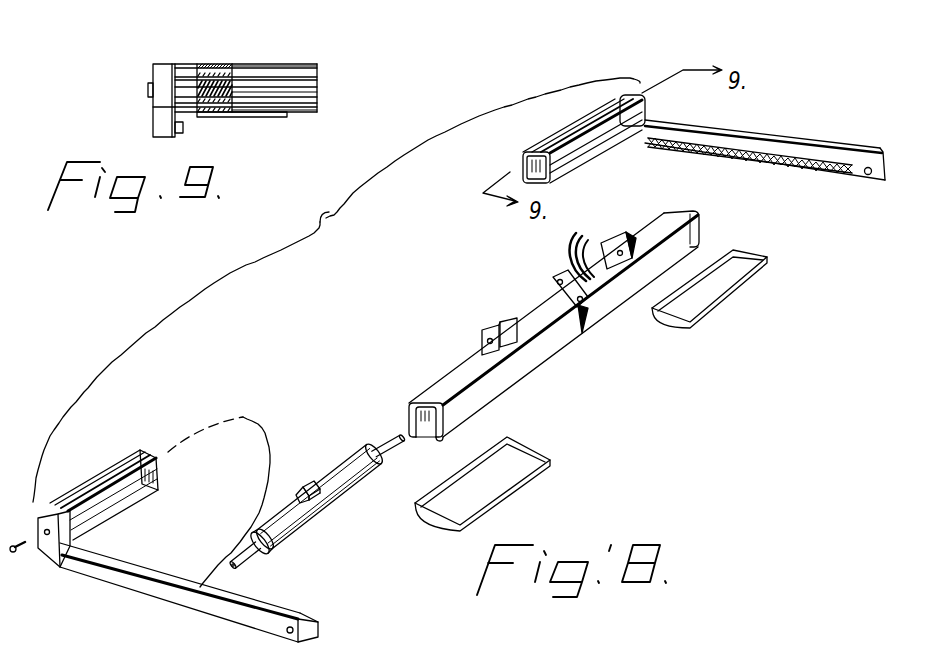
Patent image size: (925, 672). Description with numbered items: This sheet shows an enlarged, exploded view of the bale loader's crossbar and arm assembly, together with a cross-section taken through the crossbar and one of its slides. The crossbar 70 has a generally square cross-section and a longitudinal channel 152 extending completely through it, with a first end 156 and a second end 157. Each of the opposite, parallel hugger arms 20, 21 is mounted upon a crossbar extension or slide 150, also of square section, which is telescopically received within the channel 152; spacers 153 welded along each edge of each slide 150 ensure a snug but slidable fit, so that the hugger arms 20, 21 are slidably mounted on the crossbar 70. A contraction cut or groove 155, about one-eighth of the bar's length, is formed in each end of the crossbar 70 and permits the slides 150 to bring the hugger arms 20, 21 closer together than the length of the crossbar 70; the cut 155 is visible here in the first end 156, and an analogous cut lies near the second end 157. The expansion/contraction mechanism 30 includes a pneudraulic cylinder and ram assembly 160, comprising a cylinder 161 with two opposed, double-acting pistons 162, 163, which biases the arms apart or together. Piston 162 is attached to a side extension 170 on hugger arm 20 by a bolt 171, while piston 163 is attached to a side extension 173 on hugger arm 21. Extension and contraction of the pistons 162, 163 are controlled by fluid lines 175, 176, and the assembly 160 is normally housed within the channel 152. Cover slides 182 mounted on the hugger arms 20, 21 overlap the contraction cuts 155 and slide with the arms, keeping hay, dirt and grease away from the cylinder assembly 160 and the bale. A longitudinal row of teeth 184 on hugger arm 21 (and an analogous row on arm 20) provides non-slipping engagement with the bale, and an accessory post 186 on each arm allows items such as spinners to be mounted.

In FIG. 8, the hugger arm 20 is at (240, 618).
In FIG. 9, the hugger arm 21 is at (155, 124).
In FIG. 8, the hugger arm 21 is at (752, 134).
In FIG. 8, the expansion/contraction mechanism 30 is at (287, 527).
In FIG. 9, the crossbar 70 is at (253, 63).
In FIG. 8, the crossbar 70 is at (553, 360).
In FIG. 9, the crossbar extension or slide 150 is at (314, 89).
In FIG. 8, the crossbar extension or slide 150 is at (562, 172).
In FIG. 8, the longitudinal channel 152 is at (524, 163).
In FIG. 9, the spacers 153 is at (318, 78).
In FIG. 8, the spacers 153 is at (572, 128).
In FIG. 8, the contraction cut or groove 155 is at (447, 456).
In FIG. 8, the first end 156 is at (441, 430).
In FIG. 8, the second end 157 is at (698, 232).
In FIG. 8, the pneudraulic cylinder and ram assembly 160 is at (338, 496).
In FIG. 8, the cylinder 161 is at (318, 513).
In FIG. 8, the piston 162 is at (240, 562).
In FIG. 8, the piston 163 is at (381, 447).
In FIG. 8, the side extension 170 is at (38, 528).
In FIG. 8, the bolt 171 is at (13, 553).
In FIG. 8, the side extension 173 is at (628, 97).
In FIG. 8, the fluid line 175 is at (577, 250).
In FIG. 8, the fluid line 176 is at (583, 216).
In FIG. 9, the cover slide 182 is at (252, 118).
In FIG. 8, the cover slide 182 is at (512, 484).
In FIG. 8, the row of teeth 184 is at (768, 166).
In FIG. 8, the accessory post 186 is at (872, 178).